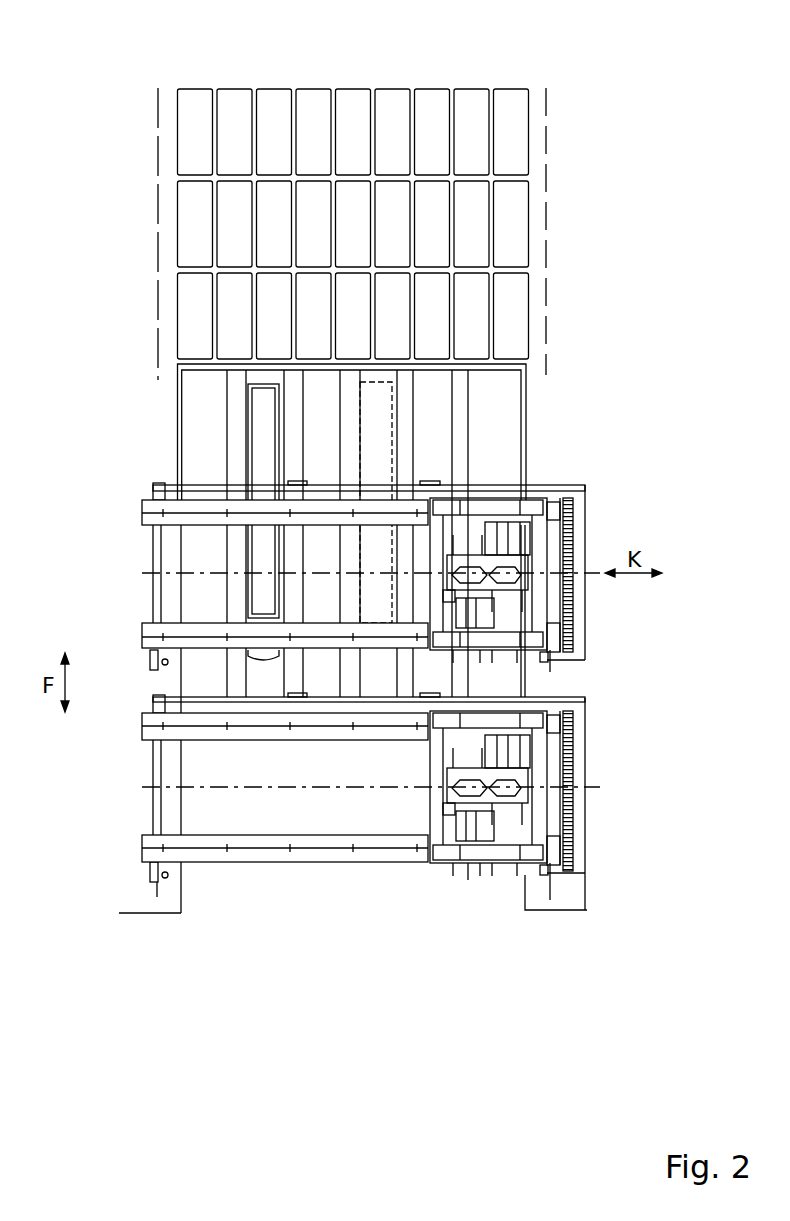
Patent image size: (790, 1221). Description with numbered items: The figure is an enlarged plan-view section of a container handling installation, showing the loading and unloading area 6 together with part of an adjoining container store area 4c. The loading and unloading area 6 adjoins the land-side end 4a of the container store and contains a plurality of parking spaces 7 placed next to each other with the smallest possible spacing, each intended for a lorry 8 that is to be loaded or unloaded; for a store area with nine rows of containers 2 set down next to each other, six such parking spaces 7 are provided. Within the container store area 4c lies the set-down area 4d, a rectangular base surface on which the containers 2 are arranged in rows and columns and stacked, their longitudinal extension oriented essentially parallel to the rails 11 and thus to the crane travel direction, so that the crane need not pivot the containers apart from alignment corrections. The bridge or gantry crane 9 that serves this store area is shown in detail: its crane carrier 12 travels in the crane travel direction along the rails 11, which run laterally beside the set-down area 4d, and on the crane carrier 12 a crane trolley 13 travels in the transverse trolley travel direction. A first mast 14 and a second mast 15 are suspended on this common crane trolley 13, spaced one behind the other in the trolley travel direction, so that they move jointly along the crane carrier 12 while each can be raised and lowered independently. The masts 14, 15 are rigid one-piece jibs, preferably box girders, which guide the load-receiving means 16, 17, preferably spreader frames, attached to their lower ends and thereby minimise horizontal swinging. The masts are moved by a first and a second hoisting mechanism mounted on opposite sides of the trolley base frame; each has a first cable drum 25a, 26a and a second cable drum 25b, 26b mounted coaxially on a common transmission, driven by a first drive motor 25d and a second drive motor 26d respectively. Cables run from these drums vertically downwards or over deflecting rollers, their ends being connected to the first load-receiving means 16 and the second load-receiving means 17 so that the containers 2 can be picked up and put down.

The container 2 is at (352, 203).
The land-side end 4a is at (217, 323).
The container store area 4c is at (272, 205).
The set-down area 4d is at (490, 272).
The loading and unloading area 6 is at (312, 770).
The parking space 7 is at (322, 433).
The lorry 8 is at (265, 435).
The bridge or gantry crane 9 is at (316, 480).
The rail 11 is at (157, 371).
The crane carrier 12 is at (240, 847).
The crane trolley 13 is at (431, 783).
The first mast 14 is at (523, 571).
The second mast 15 is at (560, 503).
The first load-receiving means 16 is at (509, 870).
The second load-receiving means 17 is at (468, 790).
The first cable drum 25a is at (533, 546).
The second cable drum 25b is at (475, 568).
The first drive motor 25d is at (528, 553).
The first cable drum 26a is at (495, 618).
The second cable drum 26b is at (495, 620).
The second drive motor 26d is at (442, 596).